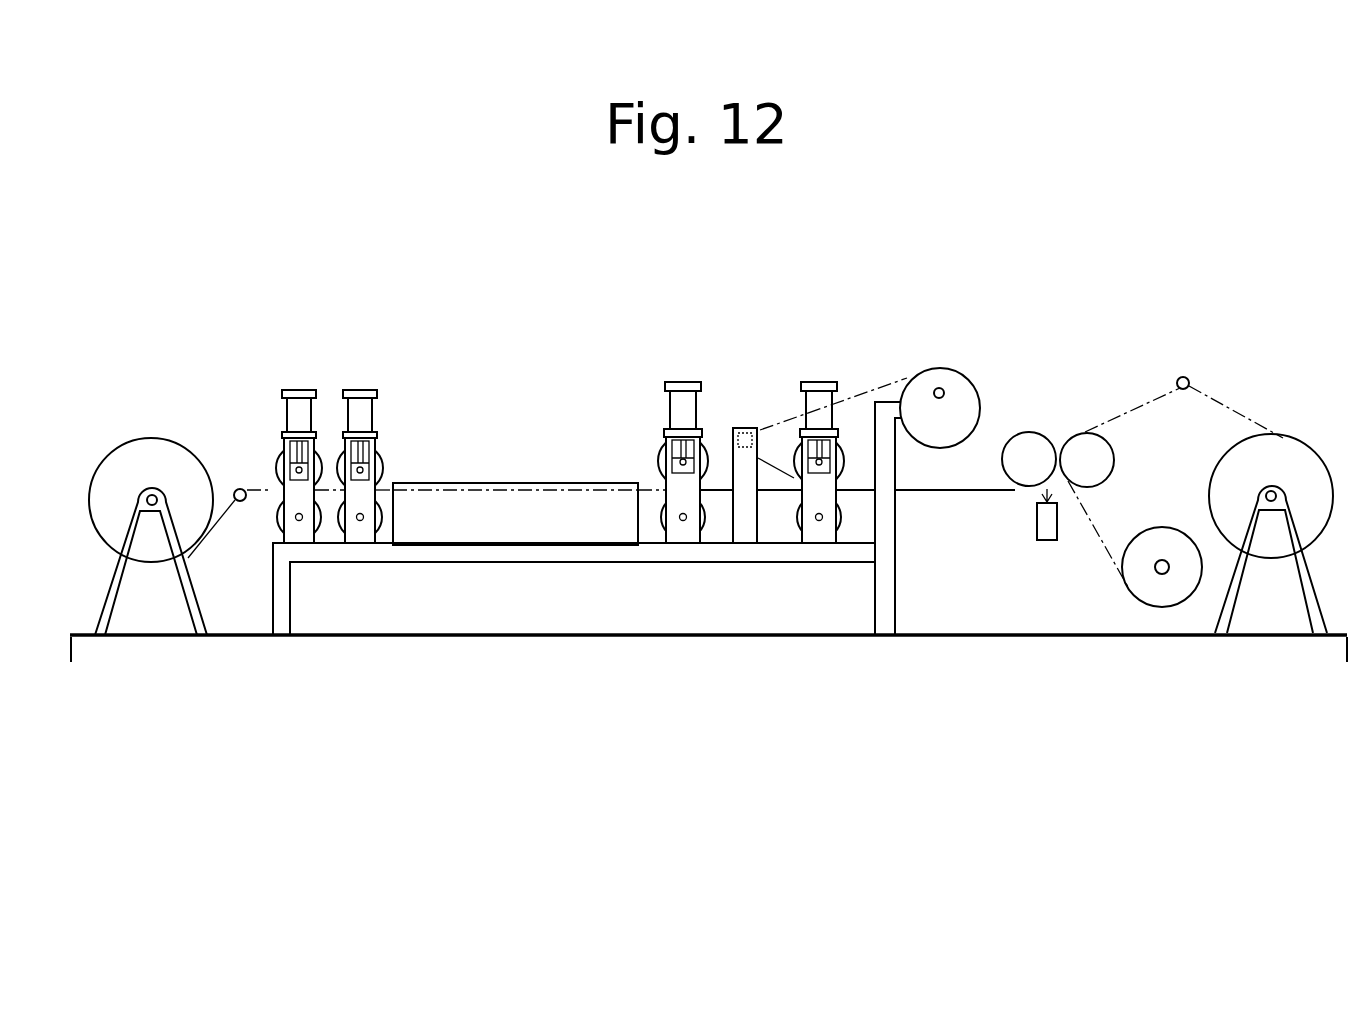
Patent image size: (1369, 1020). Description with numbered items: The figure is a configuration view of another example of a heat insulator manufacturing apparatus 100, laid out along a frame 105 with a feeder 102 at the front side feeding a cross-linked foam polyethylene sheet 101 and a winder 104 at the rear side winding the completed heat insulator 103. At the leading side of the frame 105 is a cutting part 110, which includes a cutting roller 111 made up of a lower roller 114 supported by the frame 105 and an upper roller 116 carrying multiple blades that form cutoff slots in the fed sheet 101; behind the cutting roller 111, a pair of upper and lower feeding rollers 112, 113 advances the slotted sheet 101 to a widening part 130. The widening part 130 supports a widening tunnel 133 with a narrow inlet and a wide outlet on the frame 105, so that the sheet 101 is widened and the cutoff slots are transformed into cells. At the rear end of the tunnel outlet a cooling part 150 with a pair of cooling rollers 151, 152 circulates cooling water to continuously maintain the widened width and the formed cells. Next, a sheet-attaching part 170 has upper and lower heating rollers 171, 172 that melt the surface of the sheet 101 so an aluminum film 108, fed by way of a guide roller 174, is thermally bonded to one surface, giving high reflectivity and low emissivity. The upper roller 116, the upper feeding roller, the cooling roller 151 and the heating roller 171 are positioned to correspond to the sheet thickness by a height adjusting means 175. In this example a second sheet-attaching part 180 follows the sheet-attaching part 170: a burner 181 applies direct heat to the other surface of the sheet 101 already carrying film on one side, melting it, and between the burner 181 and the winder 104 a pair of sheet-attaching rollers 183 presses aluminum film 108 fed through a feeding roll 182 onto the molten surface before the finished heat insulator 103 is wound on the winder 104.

The heat insulator manufacturing apparatus 100 is at (598, 684).
The cross-linked foam polyethylene sheet 101 is at (152, 438).
The feeder 102 is at (152, 647).
The completed heat insulator 103 is at (1268, 436).
The winder 104 is at (1270, 649).
The frame 105 is at (577, 549).
The aluminum film 108 is at (903, 386).
The cutting part 110 is at (330, 565).
The cutting roller 111 is at (270, 540).
The feeding roller 112 is at (384, 458).
The feeding roller 113 is at (384, 514).
The lower roller 114 is at (272, 522).
The upper roller 116 is at (272, 458).
The widening part 130 is at (506, 550).
The widening tunnel 133 is at (505, 481).
The cooling part 150 is at (683, 550).
The cooling roller 151 is at (657, 462).
The cooling roller 152 is at (658, 516).
The sheet-attaching part 170 is at (818, 572).
The heating roller 171 is at (845, 462).
The heating roller 172 is at (845, 505).
The guide roller 174 is at (752, 428).
The height adjusting means 175 is at (295, 390).
The 2-sheet-attaching part 180 is at (1043, 562).
The burner 181 is at (1036, 522).
The feeding roll 182 is at (1181, 612).
The sheet-attaching rollers 183 is at (1052, 426).